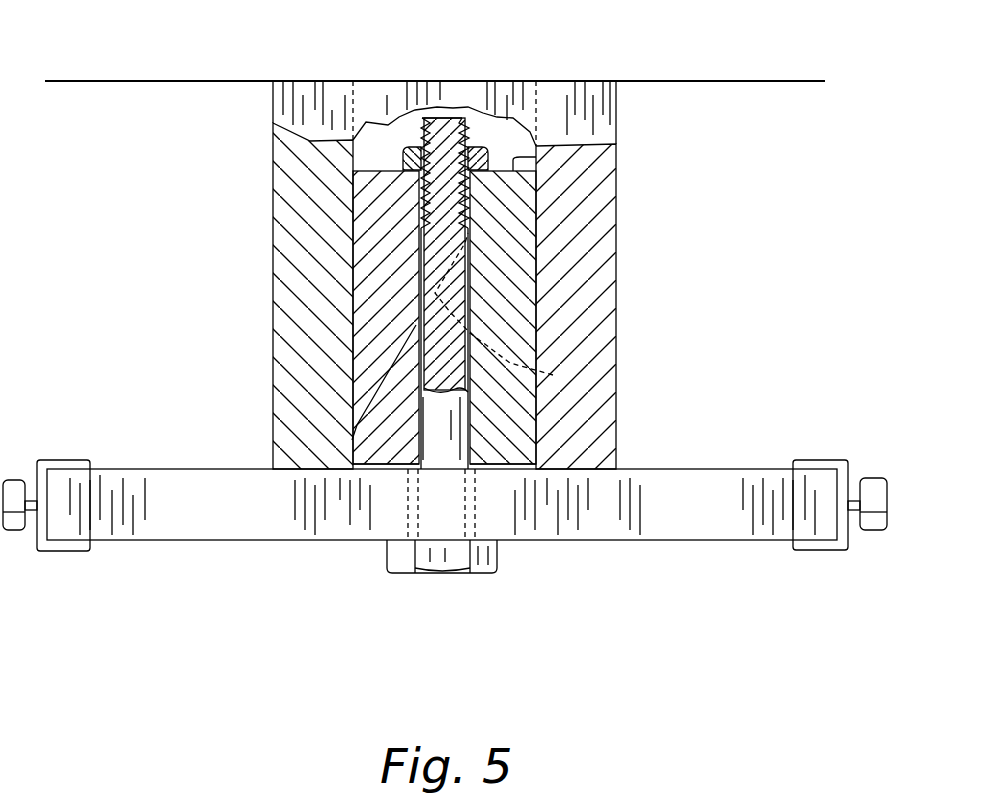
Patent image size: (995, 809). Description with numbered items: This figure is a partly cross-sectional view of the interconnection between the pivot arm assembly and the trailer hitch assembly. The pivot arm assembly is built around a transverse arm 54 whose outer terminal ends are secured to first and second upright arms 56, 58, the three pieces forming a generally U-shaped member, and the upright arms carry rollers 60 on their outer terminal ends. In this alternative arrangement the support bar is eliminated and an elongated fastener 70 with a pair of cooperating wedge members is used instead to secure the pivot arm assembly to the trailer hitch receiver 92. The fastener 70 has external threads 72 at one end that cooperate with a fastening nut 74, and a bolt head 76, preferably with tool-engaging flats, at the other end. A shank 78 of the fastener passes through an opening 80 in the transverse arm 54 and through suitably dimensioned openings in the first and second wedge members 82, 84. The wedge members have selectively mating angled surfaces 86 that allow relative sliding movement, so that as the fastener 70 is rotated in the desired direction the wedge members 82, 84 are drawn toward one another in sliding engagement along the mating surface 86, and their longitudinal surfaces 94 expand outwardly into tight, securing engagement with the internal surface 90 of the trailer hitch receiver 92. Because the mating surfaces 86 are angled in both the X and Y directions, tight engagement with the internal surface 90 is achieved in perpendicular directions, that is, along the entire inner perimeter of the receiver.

The transverse arm 54 is at (195, 548).
The first upright arm 56 is at (822, 460).
The second upright arm 58 is at (78, 462).
The rollers 60 is at (13, 483).
The fastener 70 is at (365, 575).
The external threads 72 is at (478, 133).
The fastening nut 74 is at (399, 157).
The bolt head 76 is at (490, 568).
The shank 78 is at (433, 432).
The opening 80 is at (447, 523).
The first wedge member 82 is at (508, 339).
The second wedge member 84 is at (386, 320).
The mating angled surfaces 86 is at (553, 375).
The internal surface 90 is at (365, 158).
The trailer hitch receiver 92 is at (622, 198).
The longitudinal surfaces 94 is at (353, 278).